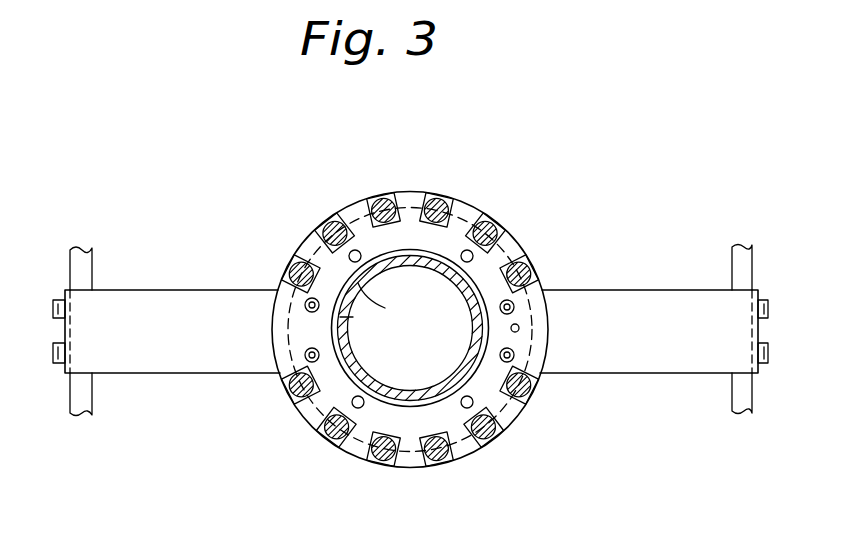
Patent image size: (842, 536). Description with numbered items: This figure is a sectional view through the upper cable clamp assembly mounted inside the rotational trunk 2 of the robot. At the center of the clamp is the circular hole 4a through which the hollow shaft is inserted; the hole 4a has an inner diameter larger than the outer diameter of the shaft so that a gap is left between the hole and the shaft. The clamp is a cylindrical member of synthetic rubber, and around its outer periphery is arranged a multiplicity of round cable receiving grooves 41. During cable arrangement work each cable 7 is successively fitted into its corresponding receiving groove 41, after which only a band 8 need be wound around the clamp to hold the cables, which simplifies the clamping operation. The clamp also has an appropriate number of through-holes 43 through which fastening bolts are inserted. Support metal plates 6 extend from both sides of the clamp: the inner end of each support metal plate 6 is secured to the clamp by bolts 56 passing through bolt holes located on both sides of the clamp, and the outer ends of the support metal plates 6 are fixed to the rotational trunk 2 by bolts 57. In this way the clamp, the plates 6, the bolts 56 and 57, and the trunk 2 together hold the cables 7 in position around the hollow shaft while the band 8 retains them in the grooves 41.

The rotational trunk 2 is at (742, 268).
The circular hole 4a is at (347, 370).
The support metal plate 6 is at (185, 308).
The cable 7 is at (330, 221).
The band 8 is at (530, 265).
The cable receiving groove 41 is at (537, 401).
The through-hole 43 is at (349, 256).
The bolt 56 is at (513, 353).
The bolt 57 is at (52, 300).